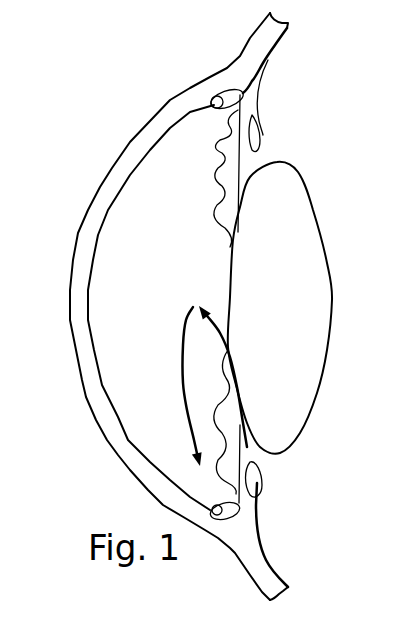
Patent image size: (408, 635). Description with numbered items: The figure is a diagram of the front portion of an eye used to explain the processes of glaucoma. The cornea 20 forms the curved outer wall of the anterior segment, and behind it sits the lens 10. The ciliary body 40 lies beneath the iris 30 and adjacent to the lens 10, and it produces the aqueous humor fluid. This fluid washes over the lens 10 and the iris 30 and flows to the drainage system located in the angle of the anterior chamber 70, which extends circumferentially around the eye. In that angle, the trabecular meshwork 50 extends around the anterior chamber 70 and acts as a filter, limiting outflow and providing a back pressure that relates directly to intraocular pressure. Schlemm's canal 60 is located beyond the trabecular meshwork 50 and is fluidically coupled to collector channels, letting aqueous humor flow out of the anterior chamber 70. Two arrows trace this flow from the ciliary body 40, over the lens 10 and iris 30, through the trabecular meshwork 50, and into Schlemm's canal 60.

The lens 10 is at (318, 392).
The cornea 20 is at (90, 200).
The iris 30 is at (218, 183).
The ciliary body 40 is at (264, 133).
The trabecular meshwork 50 is at (214, 108).
The Schlemm's canal 60 is at (228, 91).
The anterior chamber 70 is at (174, 284).